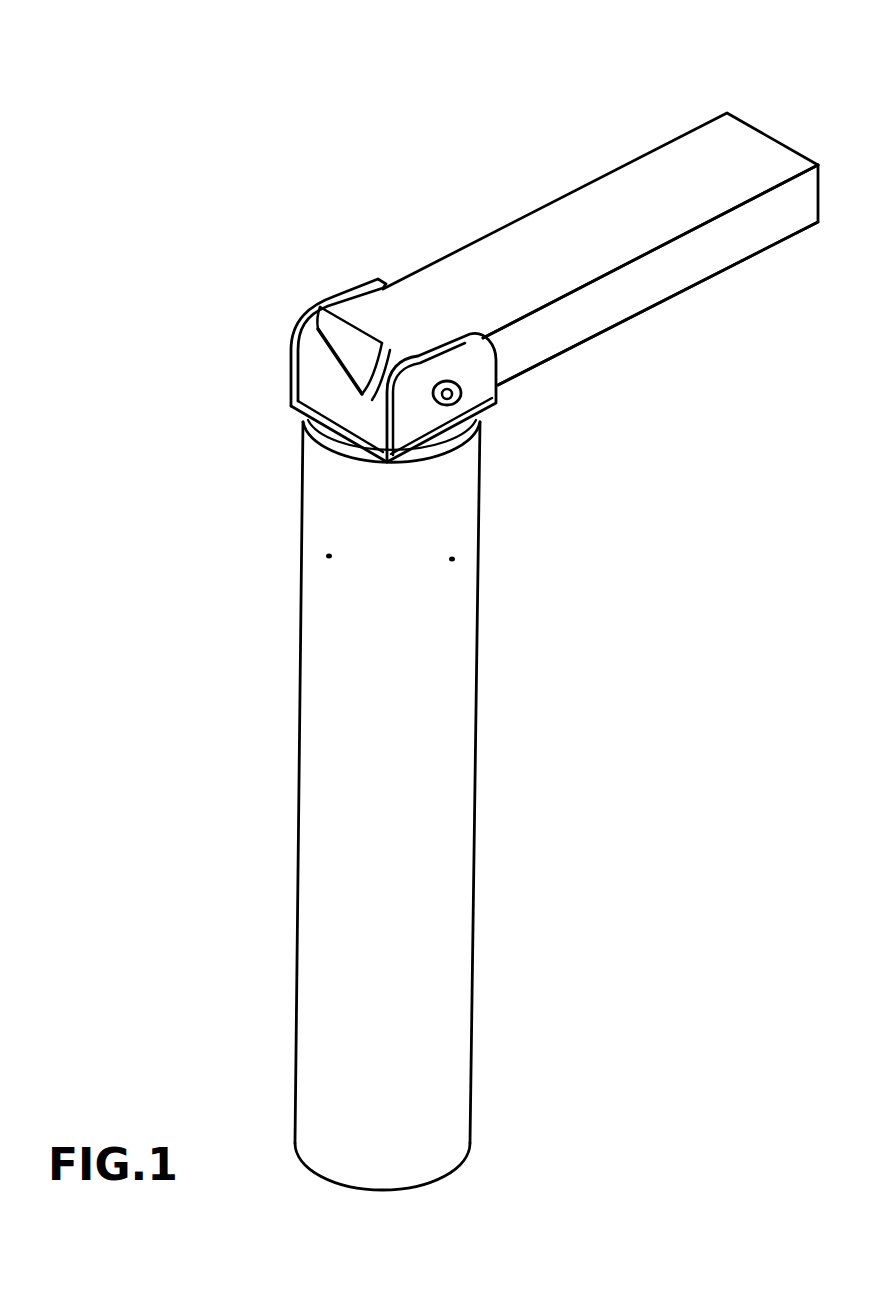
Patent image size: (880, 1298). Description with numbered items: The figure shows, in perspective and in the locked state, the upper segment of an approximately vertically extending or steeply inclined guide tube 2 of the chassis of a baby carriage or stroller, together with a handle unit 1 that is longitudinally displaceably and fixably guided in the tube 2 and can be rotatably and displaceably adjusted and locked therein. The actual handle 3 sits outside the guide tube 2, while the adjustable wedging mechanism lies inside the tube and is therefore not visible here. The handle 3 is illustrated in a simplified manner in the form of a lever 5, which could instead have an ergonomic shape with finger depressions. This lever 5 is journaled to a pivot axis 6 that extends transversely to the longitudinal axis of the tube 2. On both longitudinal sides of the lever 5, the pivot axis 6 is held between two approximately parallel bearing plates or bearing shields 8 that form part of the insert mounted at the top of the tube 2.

The handle unit 1 is at (386, 128).
The guide tube 2 is at (447, 795).
The handle 3 is at (539, 222).
The lever 5 is at (712, 252).
The pivot axis 6 is at (462, 393).
The bearing plates 8 is at (310, 373).